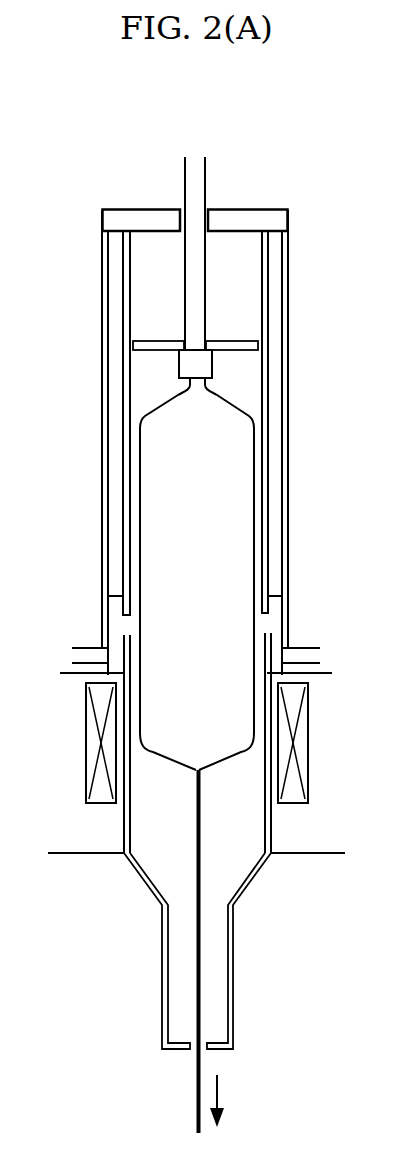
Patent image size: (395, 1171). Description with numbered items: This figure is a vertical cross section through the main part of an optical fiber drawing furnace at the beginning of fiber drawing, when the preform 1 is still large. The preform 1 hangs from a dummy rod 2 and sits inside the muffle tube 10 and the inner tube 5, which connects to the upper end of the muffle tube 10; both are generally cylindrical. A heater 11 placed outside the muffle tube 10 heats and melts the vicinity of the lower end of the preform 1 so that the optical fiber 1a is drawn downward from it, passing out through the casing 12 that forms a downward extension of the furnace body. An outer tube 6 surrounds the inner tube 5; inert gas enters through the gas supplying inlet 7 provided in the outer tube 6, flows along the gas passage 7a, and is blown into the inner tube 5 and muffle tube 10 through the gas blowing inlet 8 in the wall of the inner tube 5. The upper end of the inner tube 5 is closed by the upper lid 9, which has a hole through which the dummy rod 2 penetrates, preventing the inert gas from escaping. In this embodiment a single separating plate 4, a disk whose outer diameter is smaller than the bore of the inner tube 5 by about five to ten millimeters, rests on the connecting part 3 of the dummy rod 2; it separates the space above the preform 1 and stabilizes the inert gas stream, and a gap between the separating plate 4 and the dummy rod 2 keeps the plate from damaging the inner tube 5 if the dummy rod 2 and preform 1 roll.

The preform 1 is at (213, 555).
The optical fiber 1a is at (230, 1017).
The dummy rod 2 is at (195, 259).
The connecting part 3 is at (196, 364).
The separating plate 4 is at (240, 340).
The inner tube 5 is at (122, 422).
The outer tube 6 is at (102, 383).
The gas supplying inlet 7 is at (72, 650).
The gas passage 7a is at (273, 645).
The gas blowing inlet 8 is at (130, 627).
The upper lid 9 is at (235, 215).
The muffle tube 10 is at (124, 827).
The heater 11 is at (87, 743).
The casing 12 is at (235, 942).